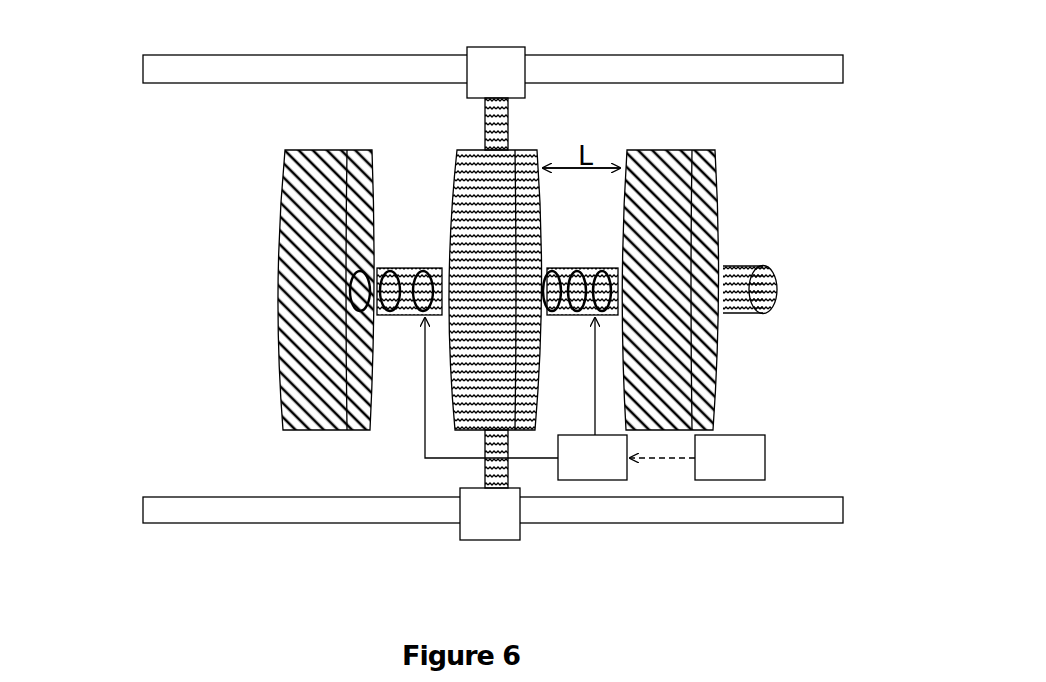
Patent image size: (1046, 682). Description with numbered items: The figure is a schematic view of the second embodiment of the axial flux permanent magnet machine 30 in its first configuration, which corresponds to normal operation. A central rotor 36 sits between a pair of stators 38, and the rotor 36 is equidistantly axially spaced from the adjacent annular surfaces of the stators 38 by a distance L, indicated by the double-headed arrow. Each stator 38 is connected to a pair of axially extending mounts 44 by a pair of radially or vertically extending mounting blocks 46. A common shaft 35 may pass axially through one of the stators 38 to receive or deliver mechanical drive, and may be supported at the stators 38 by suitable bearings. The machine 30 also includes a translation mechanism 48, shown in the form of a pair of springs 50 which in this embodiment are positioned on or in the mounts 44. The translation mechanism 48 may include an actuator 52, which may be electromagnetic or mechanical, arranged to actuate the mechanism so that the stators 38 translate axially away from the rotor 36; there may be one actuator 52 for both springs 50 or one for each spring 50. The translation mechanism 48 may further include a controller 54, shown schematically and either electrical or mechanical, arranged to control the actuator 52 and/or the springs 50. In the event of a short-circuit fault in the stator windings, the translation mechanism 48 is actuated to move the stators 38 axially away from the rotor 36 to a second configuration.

The axial flux permanent magnet machine 30 is at (131, 182).
The common shaft 35 is at (770, 314).
The rotor 36 is at (457, 172).
The stator 38 is at (275, 210).
The axially extending mount 44 is at (700, 72).
The mounting block 46 is at (526, 70).
The translation mechanism 48 is at (402, 366).
The spring 50 is at (585, 264).
The actuator 52 is at (526, 399).
The controller 54 is at (697, 457).